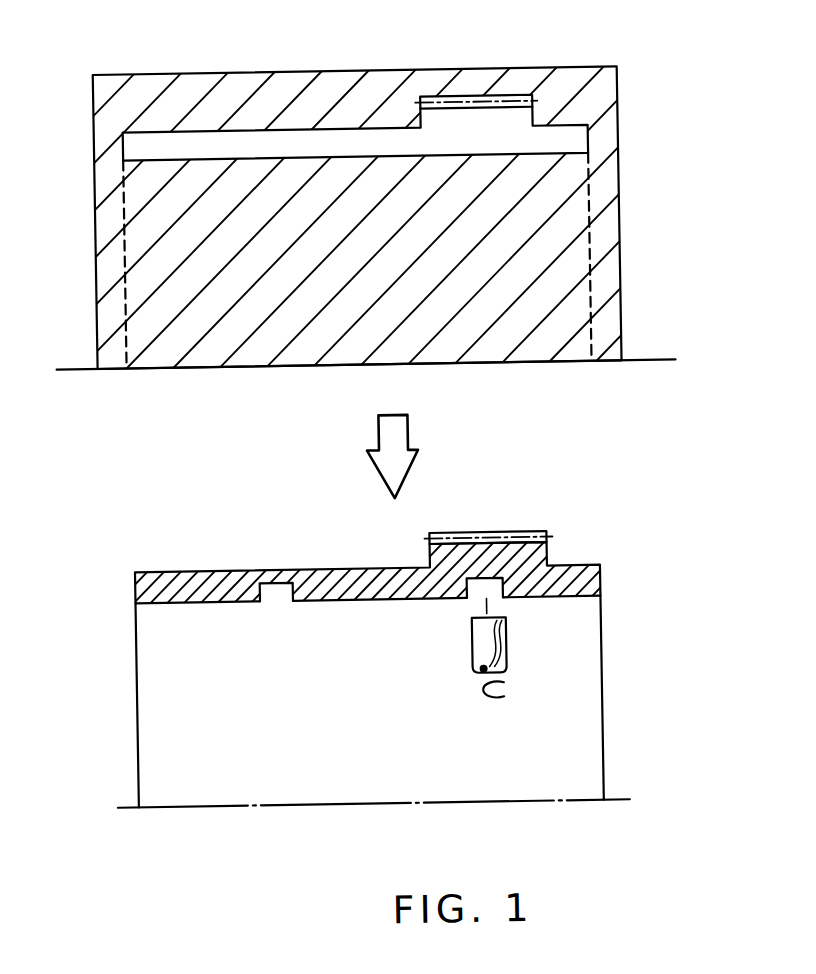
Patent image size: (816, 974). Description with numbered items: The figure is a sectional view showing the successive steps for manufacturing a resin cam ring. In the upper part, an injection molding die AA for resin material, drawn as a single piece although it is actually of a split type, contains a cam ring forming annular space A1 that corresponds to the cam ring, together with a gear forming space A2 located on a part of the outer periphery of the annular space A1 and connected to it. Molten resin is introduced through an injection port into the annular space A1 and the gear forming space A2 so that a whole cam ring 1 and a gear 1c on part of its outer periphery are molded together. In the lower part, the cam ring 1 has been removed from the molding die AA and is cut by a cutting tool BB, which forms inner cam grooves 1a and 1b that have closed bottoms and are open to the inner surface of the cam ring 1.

The injection molding die AA is at (608, 95).
The cam ring forming annular space A1 is at (310, 136).
The gear forming space A2 is at (524, 102).
The cam ring 1 is at (319, 591).
The inner cam groove 1a is at (290, 597).
The inner cam groove 1b is at (496, 596).
The gear 1c is at (503, 534).
The cutting tool BB is at (505, 663).